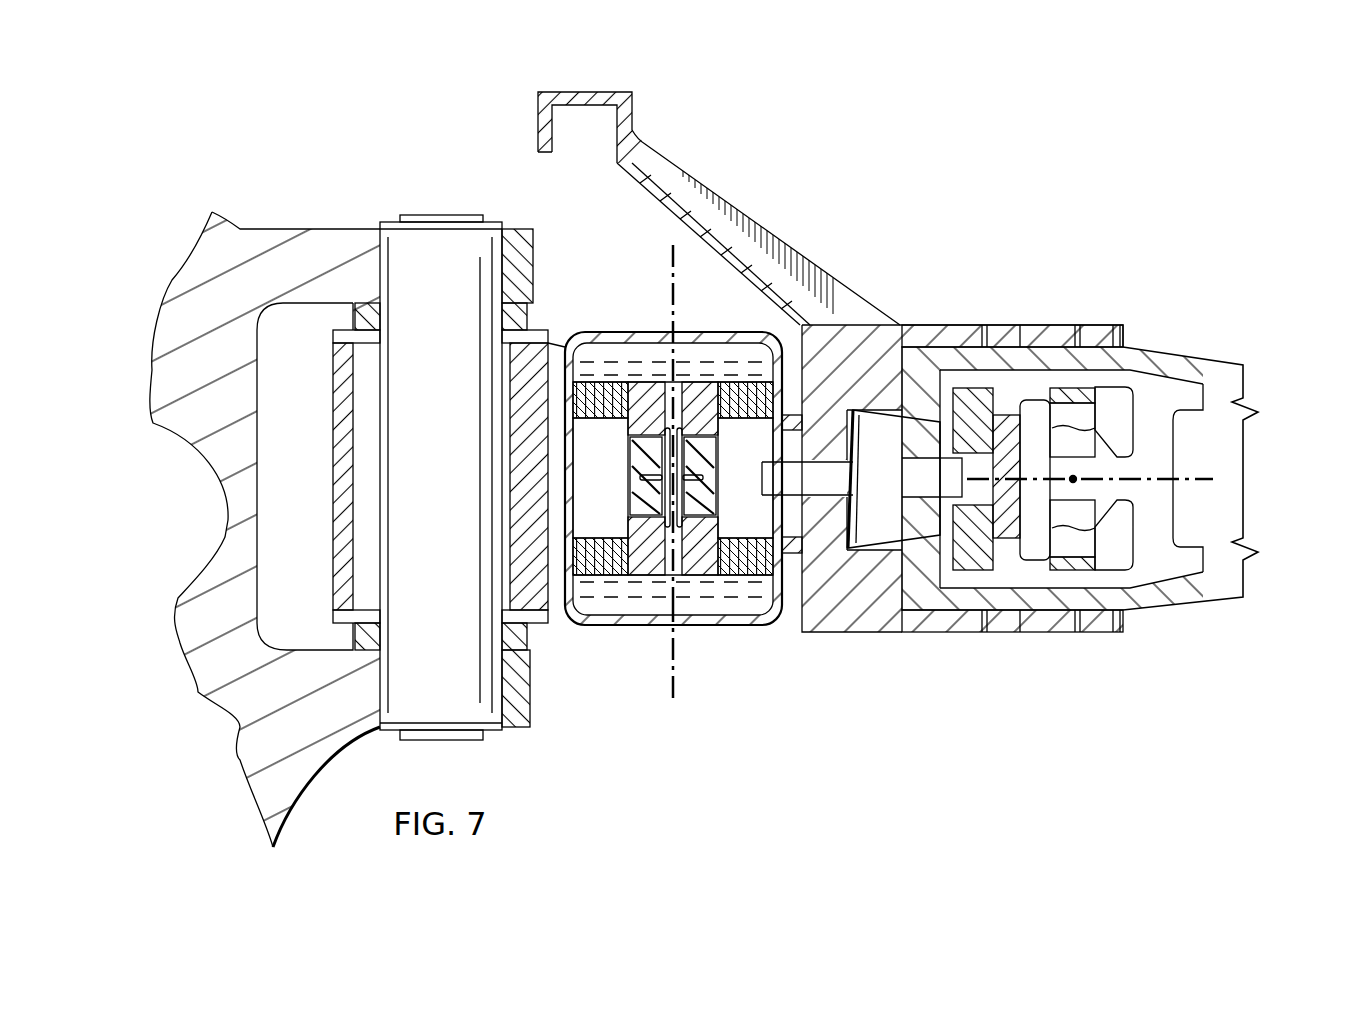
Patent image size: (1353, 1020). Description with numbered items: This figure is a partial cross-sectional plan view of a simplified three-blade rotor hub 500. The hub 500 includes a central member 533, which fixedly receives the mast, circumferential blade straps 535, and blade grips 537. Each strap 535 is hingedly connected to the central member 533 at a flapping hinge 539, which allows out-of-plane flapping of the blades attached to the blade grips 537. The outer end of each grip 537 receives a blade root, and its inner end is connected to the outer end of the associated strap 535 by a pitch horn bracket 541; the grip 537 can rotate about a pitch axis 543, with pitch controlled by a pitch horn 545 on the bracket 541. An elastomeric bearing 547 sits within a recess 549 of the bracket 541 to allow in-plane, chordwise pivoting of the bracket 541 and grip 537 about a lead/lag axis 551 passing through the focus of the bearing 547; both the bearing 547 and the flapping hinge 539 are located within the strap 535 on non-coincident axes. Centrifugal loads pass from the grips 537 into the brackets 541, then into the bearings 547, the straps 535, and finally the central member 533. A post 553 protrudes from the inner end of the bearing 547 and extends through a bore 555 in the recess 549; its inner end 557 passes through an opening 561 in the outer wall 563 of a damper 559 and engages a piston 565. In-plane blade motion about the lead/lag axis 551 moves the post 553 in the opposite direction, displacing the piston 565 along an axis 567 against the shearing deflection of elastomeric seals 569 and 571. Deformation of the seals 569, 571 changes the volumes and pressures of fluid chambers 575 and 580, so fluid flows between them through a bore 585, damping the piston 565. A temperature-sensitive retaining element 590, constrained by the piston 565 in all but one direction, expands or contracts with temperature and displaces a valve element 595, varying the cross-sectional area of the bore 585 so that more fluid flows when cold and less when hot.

The hub 500 is at (340, 187).
The central member 533 is at (262, 230).
The blade strap 535 is at (333, 490).
The blade grip 537 is at (1166, 349).
The flapping hinge 539 is at (411, 490).
The pitch horn bracket 541 is at (857, 292).
The pitch axis 543 is at (1198, 484).
The pitch horn 545 is at (592, 92).
The elastomeric bearing 547 is at (950, 602).
The recess 549 is at (935, 440).
The lead/lag axis 551 is at (1078, 478).
The post 553 is at (826, 470).
The bore 555 is at (830, 490).
The inner end 557 is at (790, 437).
The damper 559 is at (611, 628).
The opening 561 is at (820, 545).
The outer wall 563 is at (782, 585).
The piston 565 is at (708, 390).
The axis 567 is at (668, 268).
The elastomeric seal 569 is at (603, 420).
The elastomeric seal 571 is at (708, 556).
The fluid chamber 575 is at (582, 348).
The fluid chamber 580 is at (697, 602).
The bore 585 is at (648, 553).
The retaining element 590 is at (630, 497).
The valve element 595 is at (650, 470).